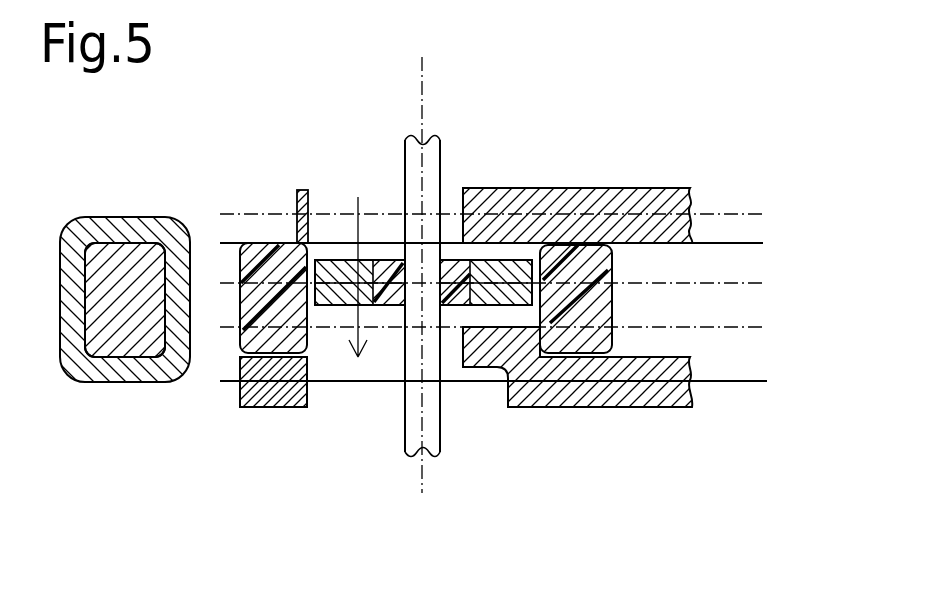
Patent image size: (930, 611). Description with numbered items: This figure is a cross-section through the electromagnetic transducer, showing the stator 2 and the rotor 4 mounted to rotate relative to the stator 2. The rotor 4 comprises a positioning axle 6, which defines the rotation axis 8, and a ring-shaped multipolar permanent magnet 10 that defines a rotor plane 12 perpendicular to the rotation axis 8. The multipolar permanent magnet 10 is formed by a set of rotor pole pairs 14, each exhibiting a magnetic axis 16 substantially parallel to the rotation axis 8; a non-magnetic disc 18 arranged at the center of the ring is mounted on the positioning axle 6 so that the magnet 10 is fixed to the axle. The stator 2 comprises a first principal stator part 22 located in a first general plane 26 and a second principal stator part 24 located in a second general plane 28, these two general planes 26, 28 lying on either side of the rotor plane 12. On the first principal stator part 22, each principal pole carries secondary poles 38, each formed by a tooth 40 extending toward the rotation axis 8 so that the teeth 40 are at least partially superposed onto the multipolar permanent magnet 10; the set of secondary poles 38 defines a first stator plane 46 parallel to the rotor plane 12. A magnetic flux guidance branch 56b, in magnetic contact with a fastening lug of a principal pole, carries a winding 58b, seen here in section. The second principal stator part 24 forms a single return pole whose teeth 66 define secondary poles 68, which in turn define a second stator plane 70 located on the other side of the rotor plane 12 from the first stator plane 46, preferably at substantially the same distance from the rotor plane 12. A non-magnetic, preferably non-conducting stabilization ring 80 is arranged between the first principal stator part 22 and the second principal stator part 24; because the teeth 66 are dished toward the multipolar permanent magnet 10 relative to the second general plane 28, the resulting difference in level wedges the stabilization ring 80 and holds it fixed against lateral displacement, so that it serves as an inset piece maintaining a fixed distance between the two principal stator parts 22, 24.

The stator 2 is at (561, 484).
The rotor 4 is at (368, 438).
The positioning axle 6 is at (433, 165).
The rotation axis 8 is at (422, 75).
The multipolar permanent magnet 10 is at (518, 215).
The rotor plane 12 is at (738, 283).
The rotor pole pairs 14 is at (331, 248).
The magnetic axis 16 is at (348, 330).
The non-magnetic disc 18 is at (385, 268).
The first principal stator part 22 is at (297, 195).
The second principal stator part 24 is at (252, 408).
The first general plane 26 is at (710, 215).
The second general plane 28 is at (722, 382).
The secondary poles 38 is at (513, 267).
The tooth 40 is at (495, 196).
The first stator plane 46 is at (745, 243).
The magnetic flux guidance branch 56b is at (110, 333).
The winding 58b is at (107, 228).
The teeth 66 is at (518, 348).
The secondary poles 68 is at (482, 342).
The second stator plane 70 is at (735, 327).
The stabilization ring 80 is at (275, 268).